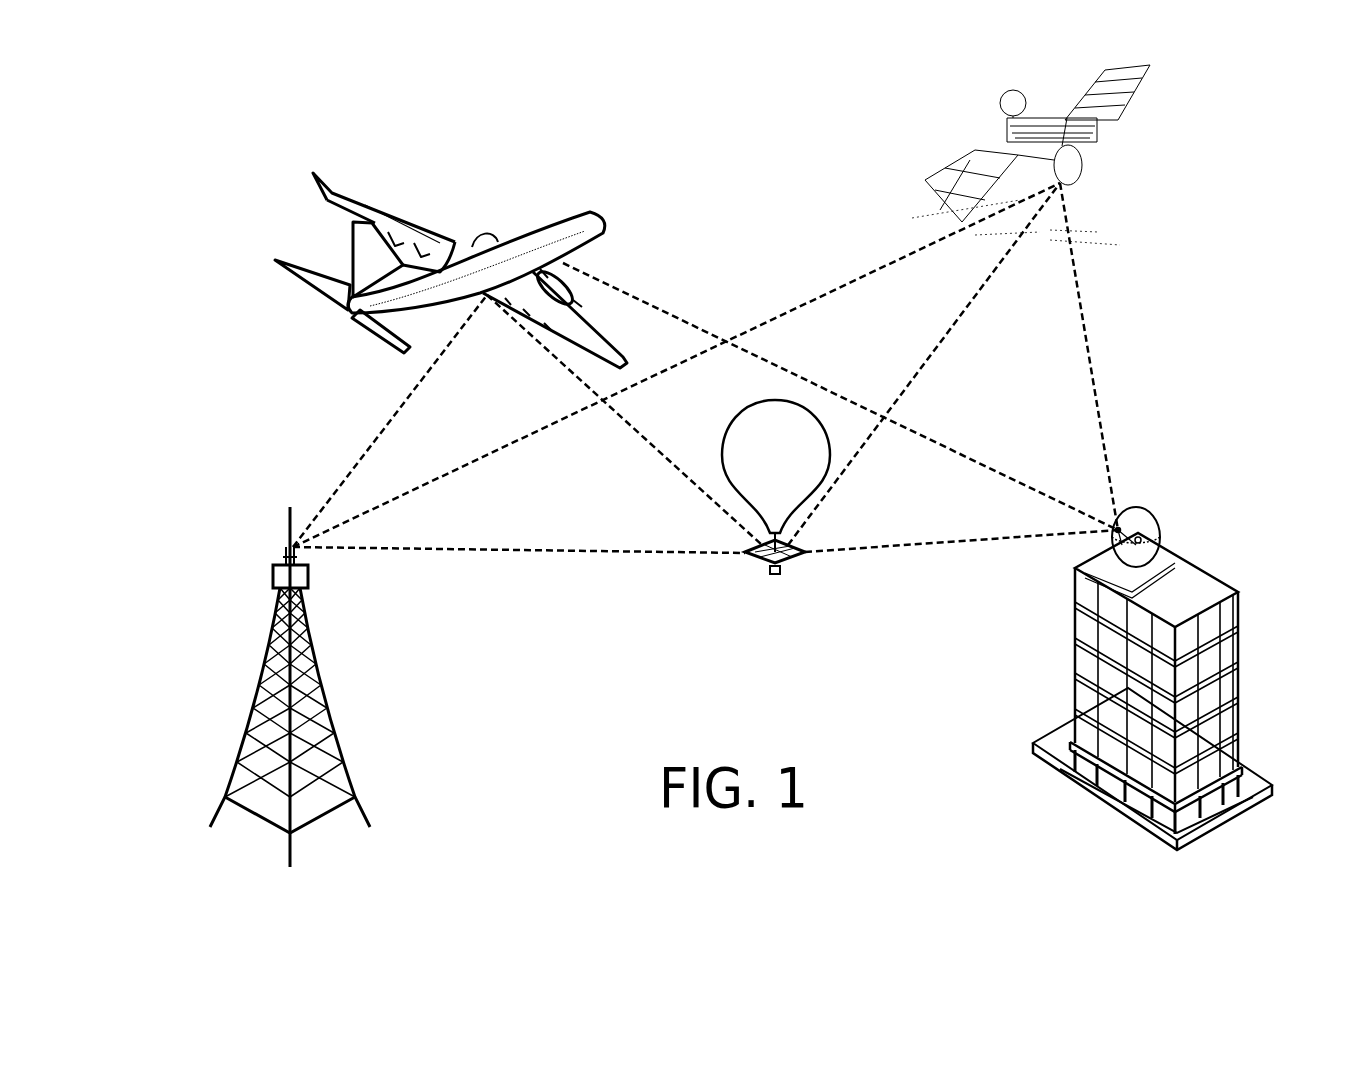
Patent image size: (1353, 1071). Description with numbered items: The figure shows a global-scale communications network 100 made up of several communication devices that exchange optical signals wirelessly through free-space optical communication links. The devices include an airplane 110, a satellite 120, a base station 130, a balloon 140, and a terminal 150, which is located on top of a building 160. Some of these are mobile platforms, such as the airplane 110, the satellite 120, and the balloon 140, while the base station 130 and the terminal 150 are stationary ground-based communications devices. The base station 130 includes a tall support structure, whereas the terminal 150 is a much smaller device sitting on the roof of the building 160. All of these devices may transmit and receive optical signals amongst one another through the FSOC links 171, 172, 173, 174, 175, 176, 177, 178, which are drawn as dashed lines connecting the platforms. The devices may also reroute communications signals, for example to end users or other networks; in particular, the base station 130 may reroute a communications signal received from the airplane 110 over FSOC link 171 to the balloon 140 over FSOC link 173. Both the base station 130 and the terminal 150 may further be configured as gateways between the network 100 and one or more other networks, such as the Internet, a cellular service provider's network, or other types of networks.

The global-scale communications network 100 is at (255, 123).
The airplane 110 is at (607, 235).
The satellite 120 is at (1080, 178).
The base station 130 is at (268, 572).
The balloon 140 is at (722, 421).
The terminal 150 is at (1160, 518).
The building 160 is at (1240, 640).
The FSOC link 171 is at (370, 442).
The FSOC link 172 is at (497, 447).
The FSOC link 173 is at (552, 560).
The FSOC link 174 is at (677, 475).
The FSOC link 175 is at (848, 478).
The FSOC link 176 is at (935, 560).
The FSOC link 177 is at (1003, 472).
The FSOC link 178 is at (1113, 375).